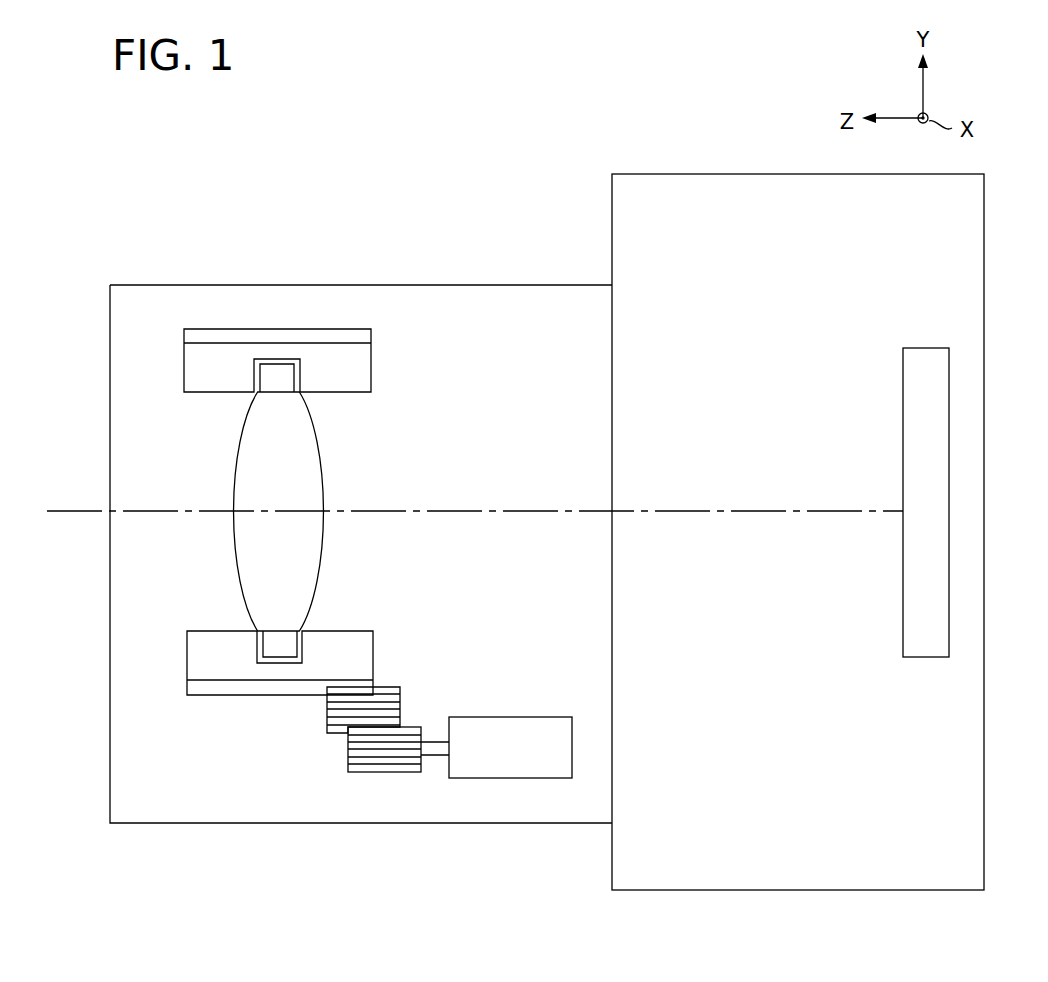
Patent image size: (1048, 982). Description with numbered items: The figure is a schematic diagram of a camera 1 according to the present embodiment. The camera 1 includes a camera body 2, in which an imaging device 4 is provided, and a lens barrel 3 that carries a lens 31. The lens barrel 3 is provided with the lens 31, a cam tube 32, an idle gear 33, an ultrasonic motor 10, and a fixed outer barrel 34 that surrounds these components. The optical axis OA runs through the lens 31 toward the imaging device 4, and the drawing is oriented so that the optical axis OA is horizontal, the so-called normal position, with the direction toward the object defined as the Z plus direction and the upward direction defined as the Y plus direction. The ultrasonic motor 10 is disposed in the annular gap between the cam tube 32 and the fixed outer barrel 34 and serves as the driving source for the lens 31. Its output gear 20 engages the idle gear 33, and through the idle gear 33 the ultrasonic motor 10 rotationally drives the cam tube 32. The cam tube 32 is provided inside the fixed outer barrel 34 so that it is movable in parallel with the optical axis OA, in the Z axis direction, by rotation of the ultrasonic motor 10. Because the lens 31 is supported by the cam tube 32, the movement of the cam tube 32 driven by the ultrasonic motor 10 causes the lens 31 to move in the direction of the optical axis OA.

The camera 1 is at (451, 163).
The camera body 2 is at (734, 152).
The lens barrel 3 is at (314, 268).
The imaging device 4 is at (935, 473).
The ultrasonic motor 10 is at (434, 778).
The output gear 20 is at (382, 758).
The lens 31 is at (305, 452).
The cam tube 32 is at (216, 672).
The idle gear 33 is at (327, 718).
The fixed outer barrel 34 is at (521, 307).
The optical axis OA is at (76, 510).